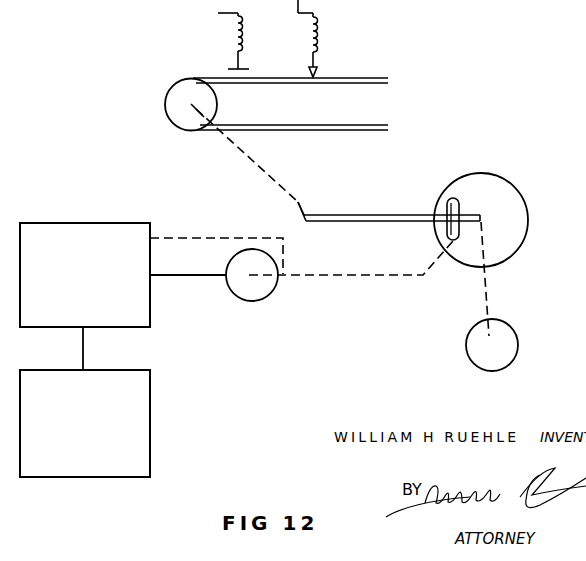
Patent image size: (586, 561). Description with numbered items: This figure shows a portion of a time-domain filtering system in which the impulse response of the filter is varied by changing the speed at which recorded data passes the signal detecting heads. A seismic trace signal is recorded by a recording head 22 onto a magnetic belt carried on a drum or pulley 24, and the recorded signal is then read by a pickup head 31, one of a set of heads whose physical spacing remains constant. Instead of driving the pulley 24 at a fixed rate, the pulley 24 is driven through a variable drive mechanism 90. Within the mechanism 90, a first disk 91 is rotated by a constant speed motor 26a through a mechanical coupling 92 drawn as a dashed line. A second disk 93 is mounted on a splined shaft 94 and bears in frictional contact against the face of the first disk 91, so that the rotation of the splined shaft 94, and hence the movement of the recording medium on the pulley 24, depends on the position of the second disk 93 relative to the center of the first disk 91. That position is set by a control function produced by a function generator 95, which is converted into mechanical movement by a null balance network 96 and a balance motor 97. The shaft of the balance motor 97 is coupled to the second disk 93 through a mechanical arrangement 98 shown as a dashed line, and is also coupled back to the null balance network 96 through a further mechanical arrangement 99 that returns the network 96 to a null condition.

The recording head 22 is at (232, 44).
The pickup head 31 is at (322, 40).
The drum 24 is at (178, 80).
The variable drive mechanism 90 is at (502, 203).
The disk 91 is at (527, 202).
The second disk 93 is at (457, 203).
The splined shaft 94 is at (337, 214).
The mechanical coupling 92 is at (492, 296).
The constant speed motor 26a is at (518, 333).
The mechanical arrangement 99 is at (232, 237).
The null balance network 96 is at (158, 320).
The balance motor 97 is at (258, 302).
The mechanical arrangement 98 is at (381, 279).
The function generator 95 is at (155, 391).